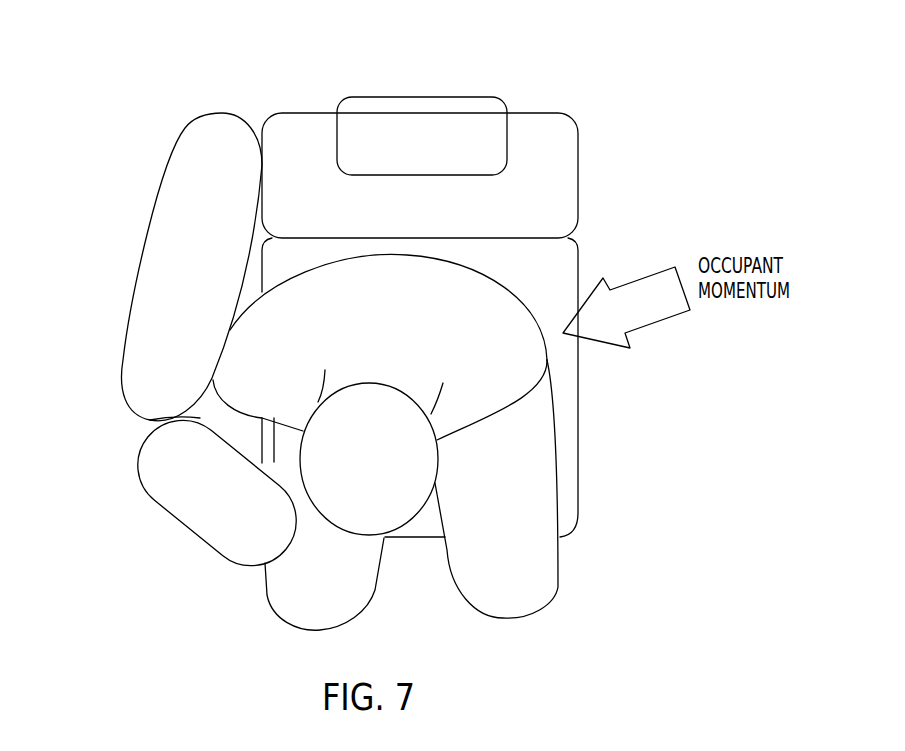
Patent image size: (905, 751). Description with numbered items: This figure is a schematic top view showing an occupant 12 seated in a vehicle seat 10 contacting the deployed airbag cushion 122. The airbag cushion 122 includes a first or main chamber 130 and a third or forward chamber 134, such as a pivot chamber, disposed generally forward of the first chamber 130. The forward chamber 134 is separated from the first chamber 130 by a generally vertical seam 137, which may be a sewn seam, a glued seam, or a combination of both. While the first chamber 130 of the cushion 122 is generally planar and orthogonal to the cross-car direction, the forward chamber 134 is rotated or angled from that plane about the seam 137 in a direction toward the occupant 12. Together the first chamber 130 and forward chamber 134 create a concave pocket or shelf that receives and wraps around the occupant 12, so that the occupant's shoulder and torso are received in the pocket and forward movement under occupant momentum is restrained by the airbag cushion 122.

The vehicle seat 10 is at (557, 180).
The occupant 12 is at (545, 450).
The airbag cushion 122 is at (117, 98).
The first chamber 130 is at (140, 247).
The forward chamber 134 is at (185, 535).
The seam 137 is at (167, 422).